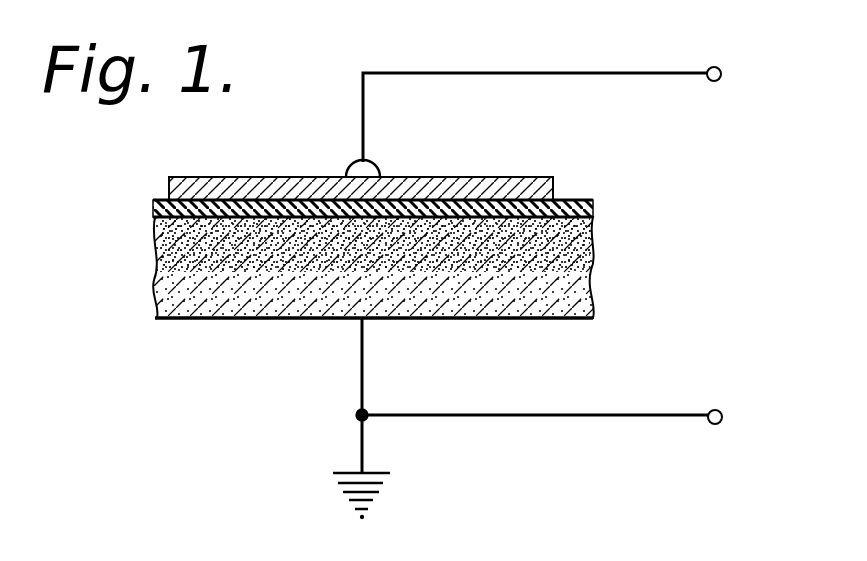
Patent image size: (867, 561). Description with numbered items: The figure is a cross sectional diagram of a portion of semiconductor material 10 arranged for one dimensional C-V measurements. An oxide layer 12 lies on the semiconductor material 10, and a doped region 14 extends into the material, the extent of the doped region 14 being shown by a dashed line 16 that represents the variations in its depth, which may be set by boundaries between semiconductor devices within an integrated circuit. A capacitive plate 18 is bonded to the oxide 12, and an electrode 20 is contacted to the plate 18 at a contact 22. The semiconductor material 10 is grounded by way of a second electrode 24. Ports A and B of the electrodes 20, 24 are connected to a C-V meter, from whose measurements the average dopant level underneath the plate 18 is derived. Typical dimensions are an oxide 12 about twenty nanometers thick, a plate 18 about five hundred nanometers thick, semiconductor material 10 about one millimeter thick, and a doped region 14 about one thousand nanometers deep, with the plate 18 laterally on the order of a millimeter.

The semiconductor material 10 is at (220, 318).
The oxide layer 12 is at (272, 198).
The doped region 14 is at (592, 252).
The dashed line 16 is at (592, 300).
The capacitive plate 18 is at (213, 177).
The electrode 20 is at (503, 72).
The contact 22 is at (380, 172).
The second electrode 24 is at (493, 415).